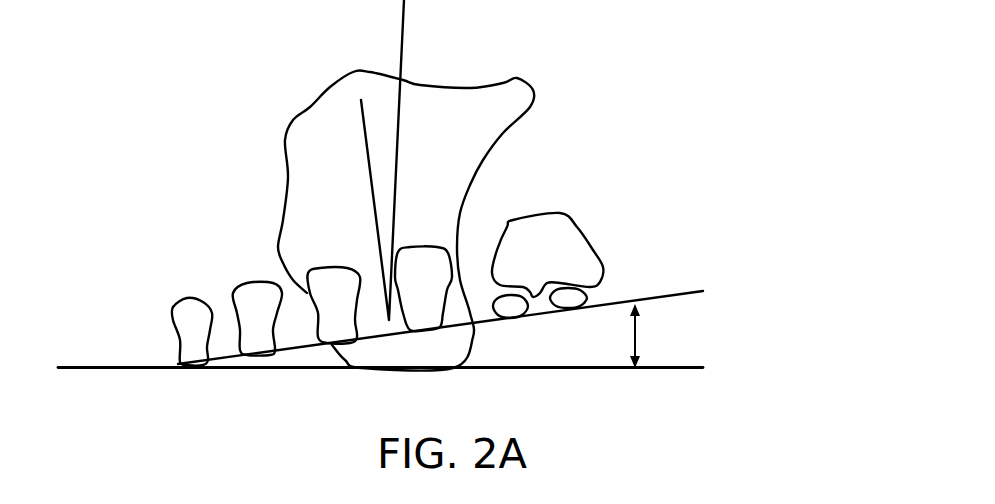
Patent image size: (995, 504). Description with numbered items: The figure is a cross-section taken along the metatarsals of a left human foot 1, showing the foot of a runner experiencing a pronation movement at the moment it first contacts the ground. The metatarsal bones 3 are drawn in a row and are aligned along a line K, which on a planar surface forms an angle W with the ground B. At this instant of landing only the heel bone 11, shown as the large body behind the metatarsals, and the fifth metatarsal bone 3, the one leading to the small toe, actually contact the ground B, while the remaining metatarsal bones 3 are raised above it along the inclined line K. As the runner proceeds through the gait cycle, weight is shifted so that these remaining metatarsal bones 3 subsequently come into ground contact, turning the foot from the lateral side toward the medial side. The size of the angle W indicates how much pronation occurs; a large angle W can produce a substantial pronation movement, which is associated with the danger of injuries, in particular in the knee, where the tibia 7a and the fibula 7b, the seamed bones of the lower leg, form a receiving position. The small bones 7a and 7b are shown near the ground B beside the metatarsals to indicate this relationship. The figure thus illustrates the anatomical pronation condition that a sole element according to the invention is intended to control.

The left human foot 1 is at (97, 257).
The metatarsal bones 3 is at (185, 297).
The tibia 7a is at (587, 307).
The fibula 7b is at (530, 317).
The heel bone 11 is at (537, 103).
The angle of inclination A is at (367, 148).
The ground B is at (680, 370).
The line of metatarsal alignment K is at (660, 297).
The angle W is at (638, 338).